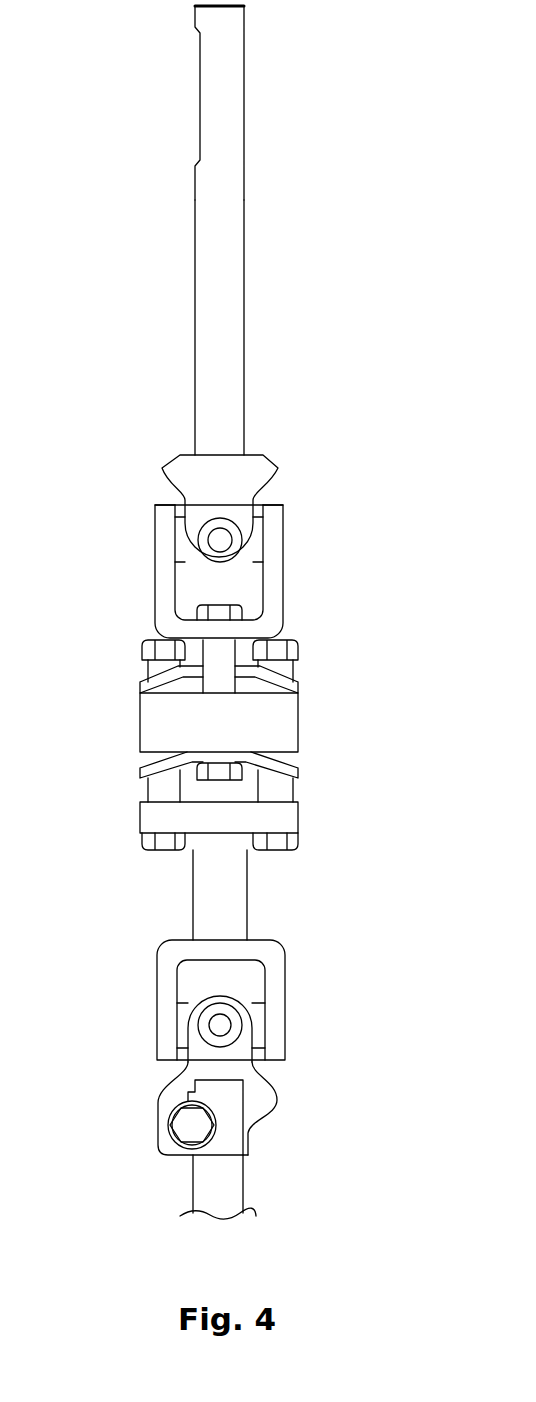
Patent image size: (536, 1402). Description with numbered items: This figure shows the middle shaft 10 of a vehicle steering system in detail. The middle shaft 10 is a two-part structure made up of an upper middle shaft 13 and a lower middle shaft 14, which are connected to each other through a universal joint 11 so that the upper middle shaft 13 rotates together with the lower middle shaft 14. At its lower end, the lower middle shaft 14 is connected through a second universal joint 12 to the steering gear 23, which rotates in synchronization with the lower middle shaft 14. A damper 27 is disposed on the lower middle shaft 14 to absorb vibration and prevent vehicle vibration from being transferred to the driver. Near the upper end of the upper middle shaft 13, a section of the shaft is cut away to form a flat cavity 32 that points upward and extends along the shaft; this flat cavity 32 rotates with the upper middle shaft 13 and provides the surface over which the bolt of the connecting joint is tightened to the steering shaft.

The middle shaft 10 is at (316, 461).
The universal joint 11 is at (227, 542).
The universal joint 12 is at (228, 1025).
The upper middle shaft 13 is at (212, 388).
The lower middle shaft 14 is at (205, 890).
The steering gear 23 is at (230, 1187).
The damper 27 is at (268, 723).
The flat cavity 32 is at (200, 97).